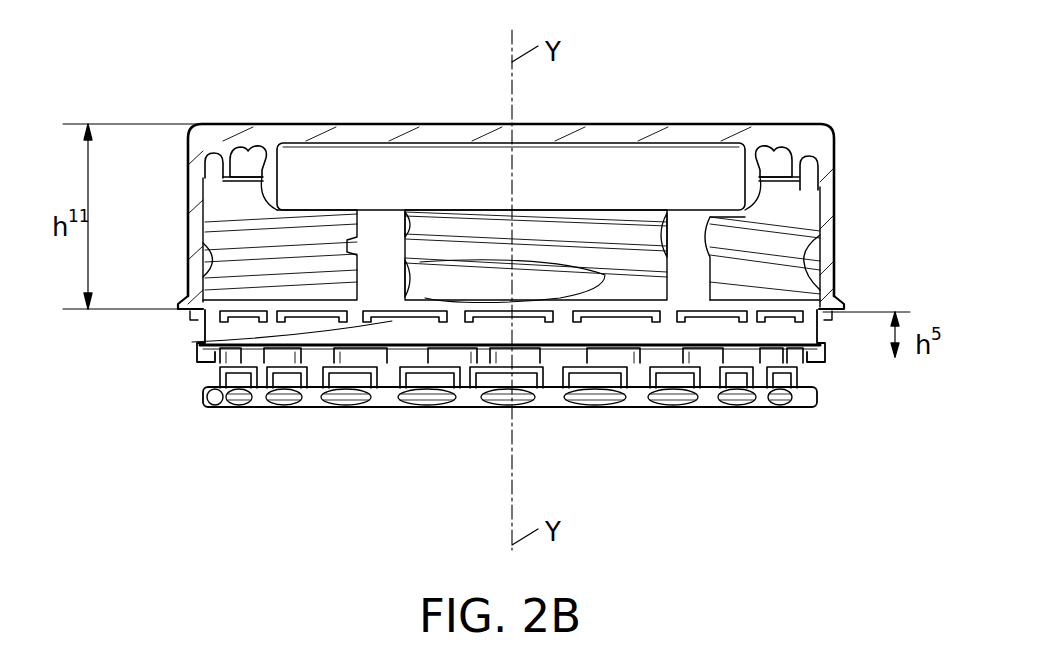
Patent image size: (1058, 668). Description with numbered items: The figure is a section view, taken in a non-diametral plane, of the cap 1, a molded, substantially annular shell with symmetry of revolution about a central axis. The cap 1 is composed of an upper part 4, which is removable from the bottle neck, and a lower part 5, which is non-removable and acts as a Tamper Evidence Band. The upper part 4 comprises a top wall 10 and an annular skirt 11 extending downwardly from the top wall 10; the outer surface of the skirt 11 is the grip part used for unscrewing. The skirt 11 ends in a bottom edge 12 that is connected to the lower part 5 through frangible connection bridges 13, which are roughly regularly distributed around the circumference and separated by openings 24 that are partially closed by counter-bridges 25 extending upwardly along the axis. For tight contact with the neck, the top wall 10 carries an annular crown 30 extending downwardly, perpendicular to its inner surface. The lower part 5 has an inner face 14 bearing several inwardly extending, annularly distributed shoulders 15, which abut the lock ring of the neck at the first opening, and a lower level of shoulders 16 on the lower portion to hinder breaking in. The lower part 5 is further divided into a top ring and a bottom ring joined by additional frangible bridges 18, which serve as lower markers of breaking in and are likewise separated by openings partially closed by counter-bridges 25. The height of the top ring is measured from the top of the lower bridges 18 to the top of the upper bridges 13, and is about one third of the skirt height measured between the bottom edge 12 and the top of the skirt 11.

The cap 1 is at (866, 251).
The upper part 4 is at (163, 240).
The lower part 5 is at (136, 387).
The top wall 10 is at (593, 127).
The skirt 11 is at (834, 167).
The bottom edge 12 is at (848, 307).
The frangible connection bridges 13 is at (742, 313).
The inner face 14 is at (447, 340).
The shoulders 15 is at (312, 358).
The lower level of shoulders 16 is at (737, 403).
The additional frangible bridges 18 is at (240, 392).
The openings 24 is at (330, 327).
The counter-bridges 25 is at (303, 320).
The annular crown 30 is at (758, 177).